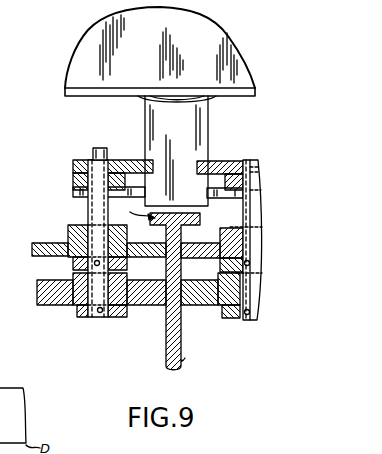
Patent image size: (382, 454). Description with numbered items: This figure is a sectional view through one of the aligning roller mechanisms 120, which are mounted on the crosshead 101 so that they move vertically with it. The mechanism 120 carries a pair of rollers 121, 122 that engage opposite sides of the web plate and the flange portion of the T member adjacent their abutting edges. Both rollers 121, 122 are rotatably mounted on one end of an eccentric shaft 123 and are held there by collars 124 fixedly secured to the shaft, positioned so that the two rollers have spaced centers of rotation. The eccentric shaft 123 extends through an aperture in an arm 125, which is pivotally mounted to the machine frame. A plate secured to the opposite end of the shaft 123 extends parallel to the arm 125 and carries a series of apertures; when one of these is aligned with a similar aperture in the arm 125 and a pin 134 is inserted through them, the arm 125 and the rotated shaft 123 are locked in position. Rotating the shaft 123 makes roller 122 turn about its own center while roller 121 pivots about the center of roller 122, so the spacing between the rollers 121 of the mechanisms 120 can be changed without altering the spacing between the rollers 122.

The crosshead 101 is at (98, 104).
The aligning roller mechanism 120 is at (47, 225).
The roller 121 is at (35, 296).
The roller 122 is at (33, 244).
The eccentric shaft 123 is at (92, 207).
The collar 124 is at (73, 262).
The arm 125 is at (78, 178).
The pin 134 is at (102, 156).